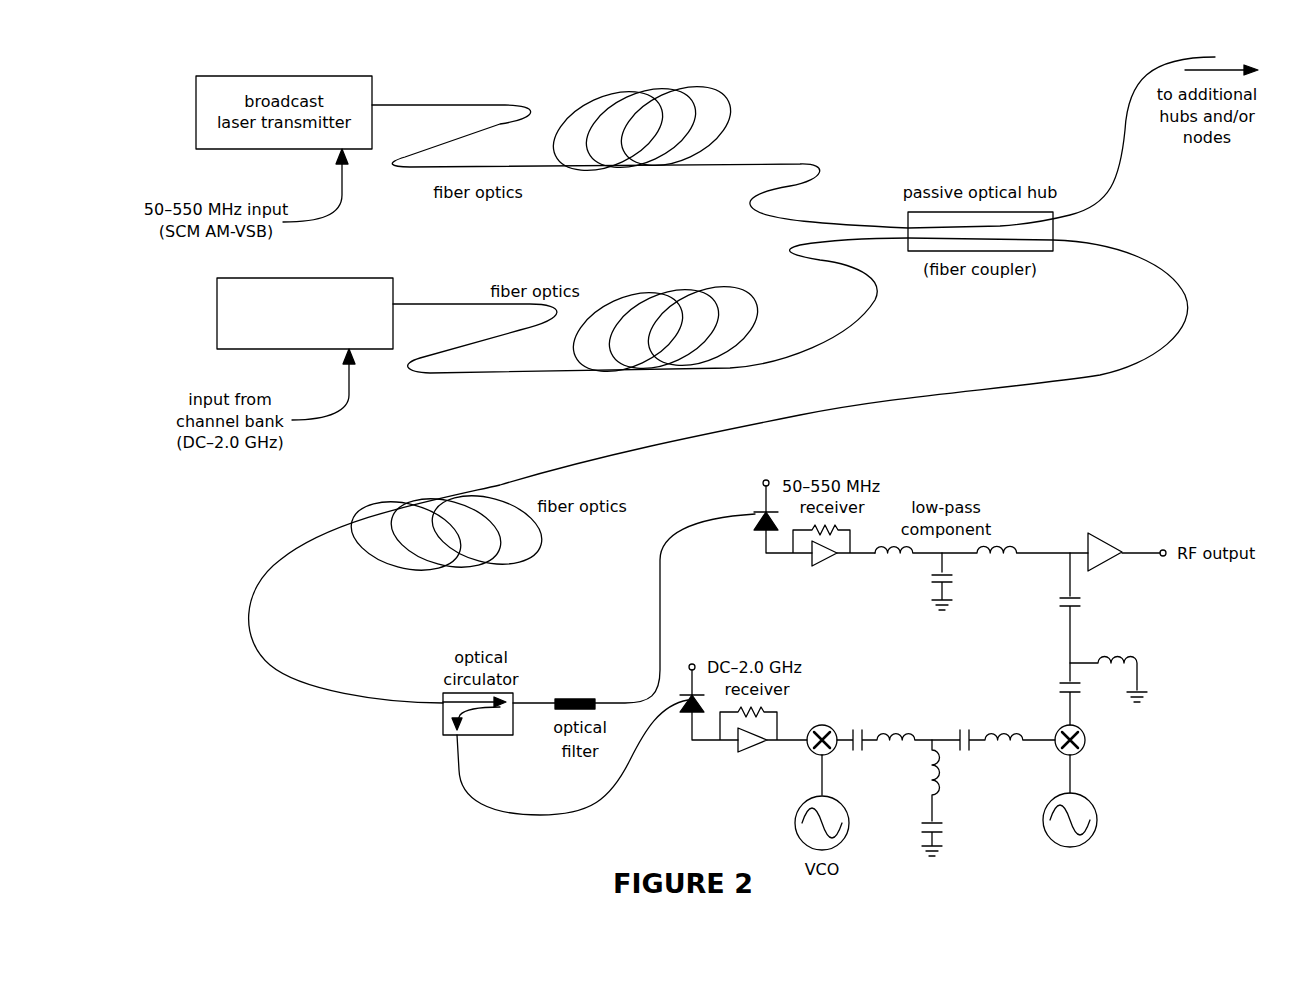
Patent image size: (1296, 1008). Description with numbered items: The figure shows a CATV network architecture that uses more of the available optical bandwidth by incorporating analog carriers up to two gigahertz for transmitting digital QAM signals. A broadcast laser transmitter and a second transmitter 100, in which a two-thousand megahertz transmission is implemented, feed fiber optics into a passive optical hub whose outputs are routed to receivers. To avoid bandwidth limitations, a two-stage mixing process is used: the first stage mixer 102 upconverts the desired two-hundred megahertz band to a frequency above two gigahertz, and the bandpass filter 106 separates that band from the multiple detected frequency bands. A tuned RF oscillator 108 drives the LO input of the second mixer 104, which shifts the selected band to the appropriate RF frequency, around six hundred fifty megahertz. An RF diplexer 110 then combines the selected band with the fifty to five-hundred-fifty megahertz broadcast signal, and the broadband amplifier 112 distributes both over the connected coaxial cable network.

The second transmitter 100 is at (229, 349).
The first stage mixer 102 is at (826, 716).
The second mixer 104 is at (1086, 745).
The bandpass filter 106 is at (888, 784).
The tuned RF oscillator 108 is at (1100, 822).
The RF diplexer 110 is at (981, 630).
The broadband amplifier 112 is at (1088, 540).